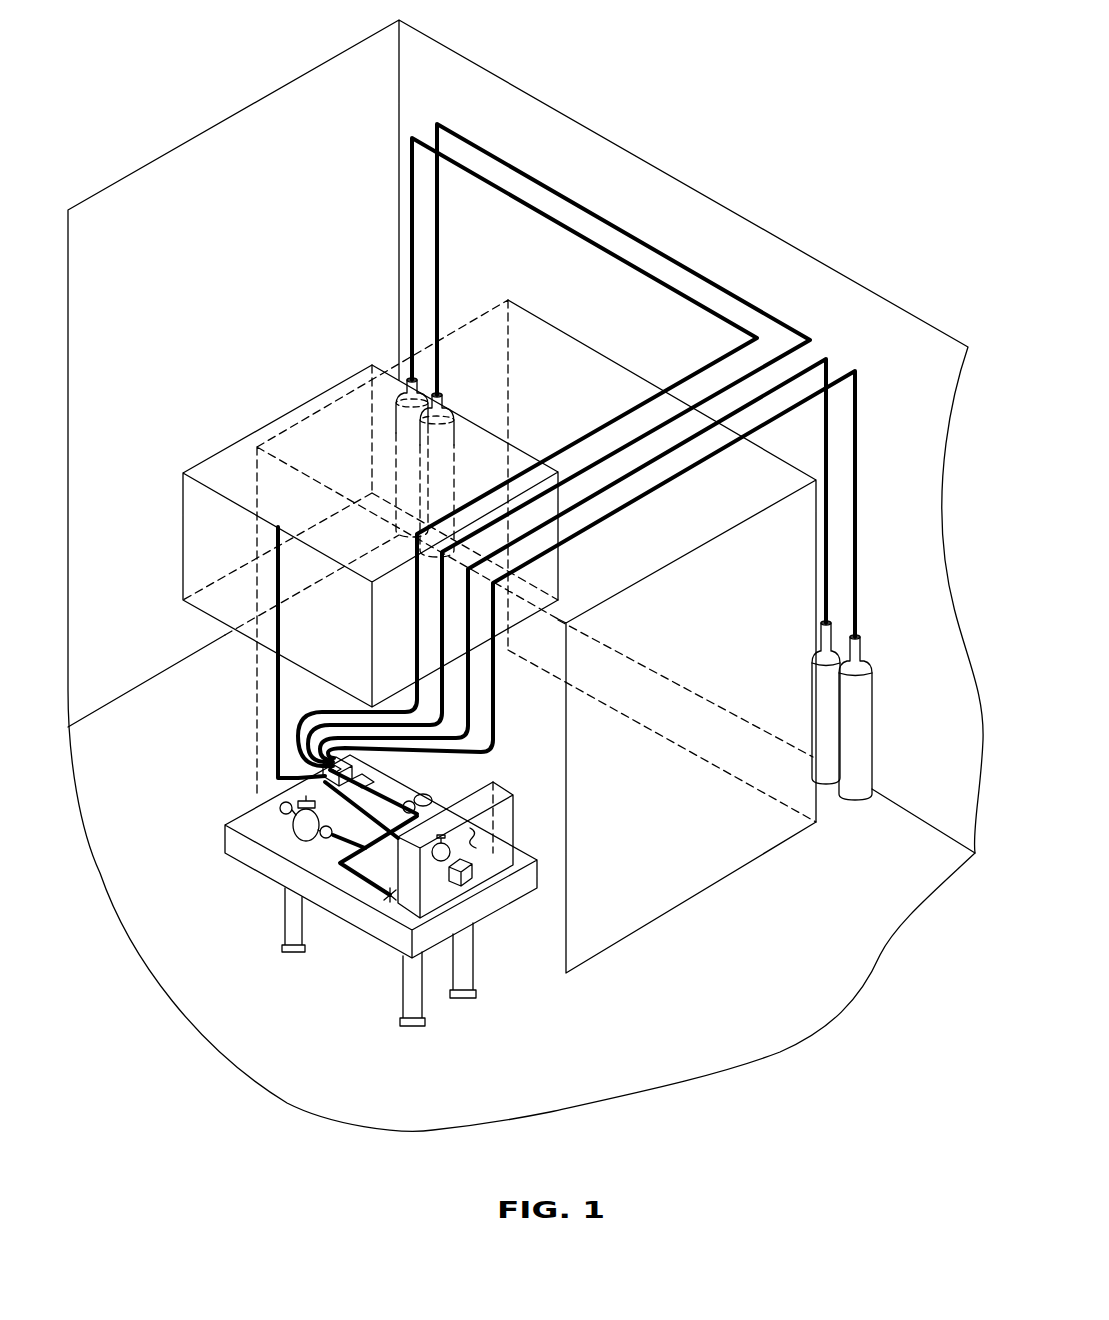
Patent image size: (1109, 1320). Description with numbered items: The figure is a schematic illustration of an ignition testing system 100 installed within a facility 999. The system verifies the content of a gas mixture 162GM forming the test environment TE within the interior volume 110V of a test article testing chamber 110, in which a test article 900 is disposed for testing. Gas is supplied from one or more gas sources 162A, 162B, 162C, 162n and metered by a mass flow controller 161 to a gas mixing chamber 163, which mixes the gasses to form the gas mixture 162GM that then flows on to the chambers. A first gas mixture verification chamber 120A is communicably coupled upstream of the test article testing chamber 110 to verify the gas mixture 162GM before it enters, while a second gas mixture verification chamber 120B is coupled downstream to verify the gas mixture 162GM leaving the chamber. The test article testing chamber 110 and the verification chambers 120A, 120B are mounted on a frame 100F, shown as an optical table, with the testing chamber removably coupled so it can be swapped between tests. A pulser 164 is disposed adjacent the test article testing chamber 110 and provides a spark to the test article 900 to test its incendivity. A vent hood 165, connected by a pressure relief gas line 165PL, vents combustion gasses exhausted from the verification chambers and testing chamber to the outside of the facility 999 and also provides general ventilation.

The facility 999 is at (873, 296).
The ignition testing system 100 is at (886, 453).
The pulser 164 is at (733, 880).
The vent hood 165 is at (182, 510).
The pressure relief gas line 165PL is at (277, 718).
The gas source 162C is at (395, 402).
The gas source 162n is at (407, 448).
The gas source 162A is at (863, 709).
The gas source 162B is at (830, 771).
The mass flow controller 161 is at (325, 769).
The gas mixing chamber 163 is at (310, 800).
The second gas mixture verification chamber 120B is at (300, 826).
The first gas mixture verification chamber 120A is at (418, 800).
The test environment TE is at (390, 897).
The frame 100F is at (405, 943).
The test article testing chamber 110 is at (460, 882).
The gas mixture 162GM is at (442, 862).
The interior volume 110V is at (477, 840).
The test article 900 is at (468, 877).